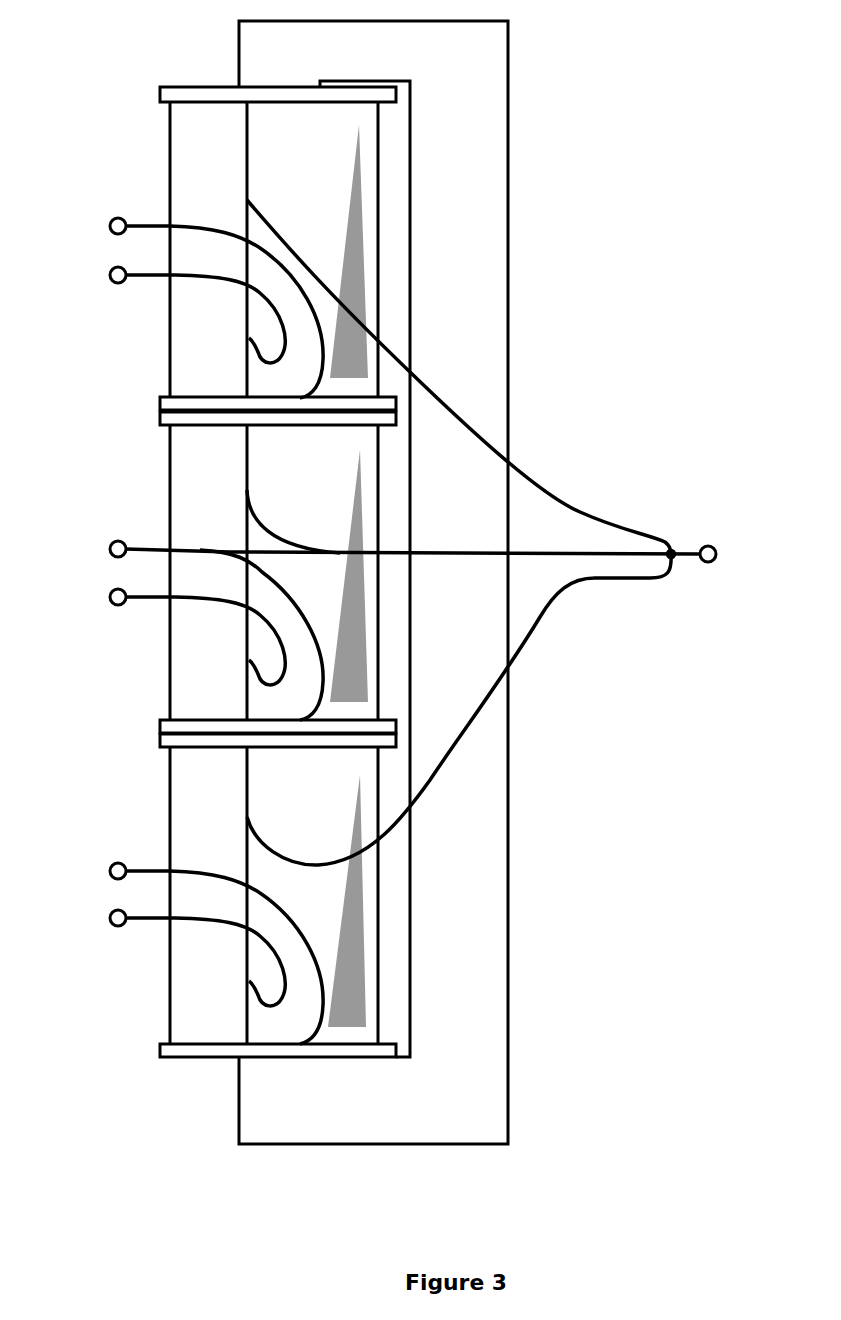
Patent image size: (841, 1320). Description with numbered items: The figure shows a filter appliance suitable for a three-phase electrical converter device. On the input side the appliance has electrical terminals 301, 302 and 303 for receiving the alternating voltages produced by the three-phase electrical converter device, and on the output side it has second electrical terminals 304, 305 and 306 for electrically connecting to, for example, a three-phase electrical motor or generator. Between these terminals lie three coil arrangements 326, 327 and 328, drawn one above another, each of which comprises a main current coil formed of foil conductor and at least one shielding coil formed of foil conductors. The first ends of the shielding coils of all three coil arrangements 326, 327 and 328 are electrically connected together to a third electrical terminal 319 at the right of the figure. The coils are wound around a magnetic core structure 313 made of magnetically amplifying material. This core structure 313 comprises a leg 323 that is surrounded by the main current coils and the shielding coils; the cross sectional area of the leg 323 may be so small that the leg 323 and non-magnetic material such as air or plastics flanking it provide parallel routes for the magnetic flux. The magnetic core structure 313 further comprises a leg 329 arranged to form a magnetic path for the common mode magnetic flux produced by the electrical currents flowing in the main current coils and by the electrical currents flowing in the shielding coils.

The electrical terminal 301 is at (110, 275).
The electrical terminal 302 is at (110, 597).
The electrical terminal 303 is at (110, 918).
The second electrical terminal 304 is at (113, 219).
The second electrical terminal 305 is at (113, 542).
The second electrical terminal 306 is at (113, 864).
The magnetic core structure 313 is at (507, 107).
The third electrical terminal 319 is at (717, 553).
The leg 323 is at (300, 77).
The coil arrangement 326 is at (330, 164).
The coil arrangement 327 is at (330, 487).
The coil arrangement 328 is at (330, 808).
The leg 329 is at (468, 499).